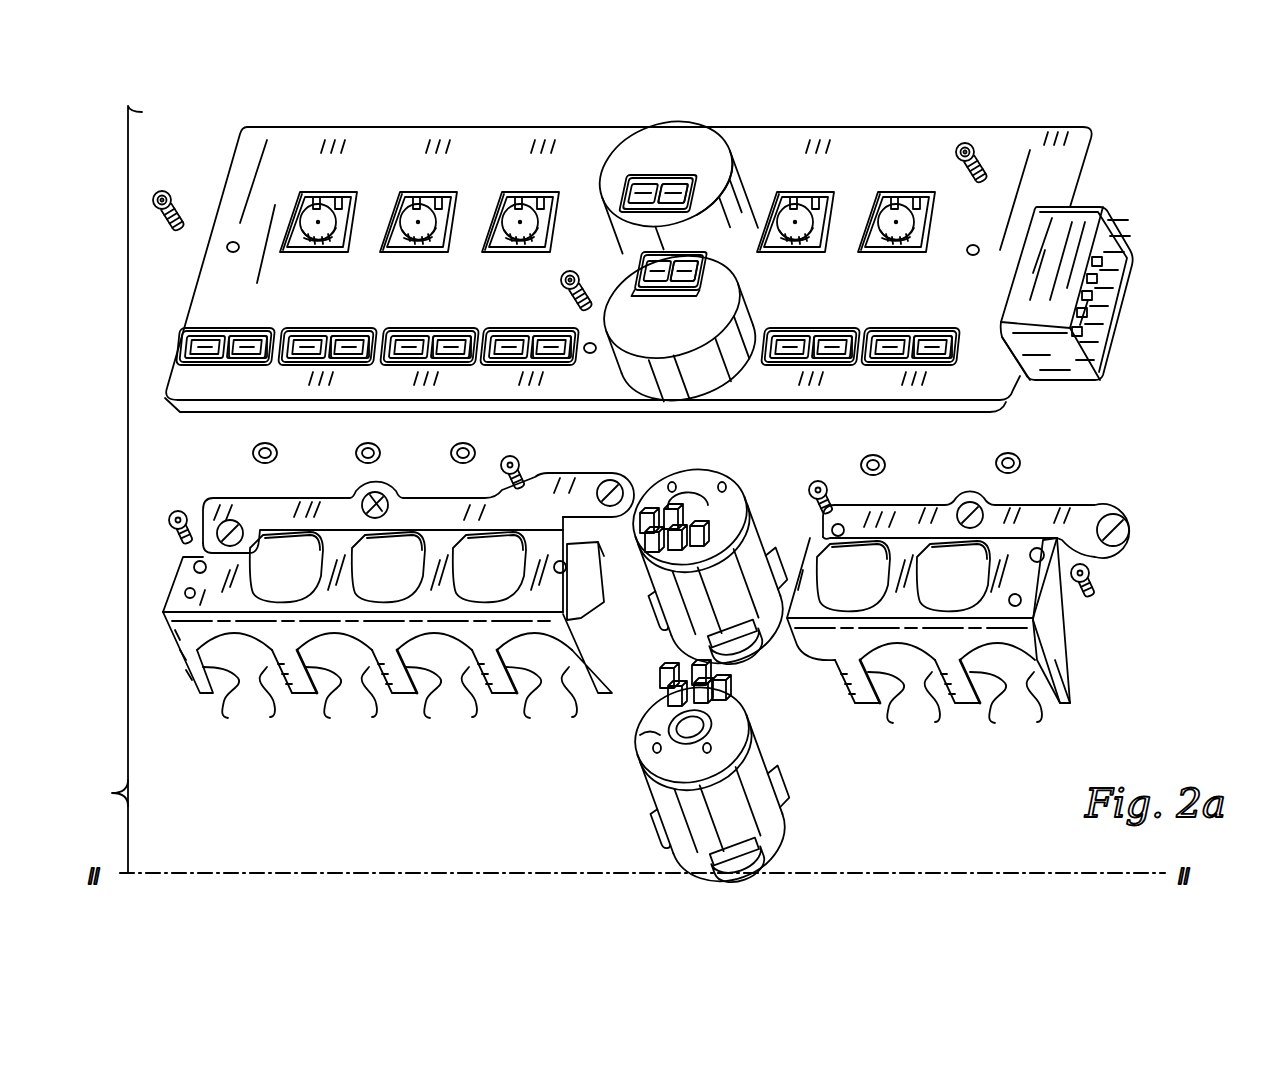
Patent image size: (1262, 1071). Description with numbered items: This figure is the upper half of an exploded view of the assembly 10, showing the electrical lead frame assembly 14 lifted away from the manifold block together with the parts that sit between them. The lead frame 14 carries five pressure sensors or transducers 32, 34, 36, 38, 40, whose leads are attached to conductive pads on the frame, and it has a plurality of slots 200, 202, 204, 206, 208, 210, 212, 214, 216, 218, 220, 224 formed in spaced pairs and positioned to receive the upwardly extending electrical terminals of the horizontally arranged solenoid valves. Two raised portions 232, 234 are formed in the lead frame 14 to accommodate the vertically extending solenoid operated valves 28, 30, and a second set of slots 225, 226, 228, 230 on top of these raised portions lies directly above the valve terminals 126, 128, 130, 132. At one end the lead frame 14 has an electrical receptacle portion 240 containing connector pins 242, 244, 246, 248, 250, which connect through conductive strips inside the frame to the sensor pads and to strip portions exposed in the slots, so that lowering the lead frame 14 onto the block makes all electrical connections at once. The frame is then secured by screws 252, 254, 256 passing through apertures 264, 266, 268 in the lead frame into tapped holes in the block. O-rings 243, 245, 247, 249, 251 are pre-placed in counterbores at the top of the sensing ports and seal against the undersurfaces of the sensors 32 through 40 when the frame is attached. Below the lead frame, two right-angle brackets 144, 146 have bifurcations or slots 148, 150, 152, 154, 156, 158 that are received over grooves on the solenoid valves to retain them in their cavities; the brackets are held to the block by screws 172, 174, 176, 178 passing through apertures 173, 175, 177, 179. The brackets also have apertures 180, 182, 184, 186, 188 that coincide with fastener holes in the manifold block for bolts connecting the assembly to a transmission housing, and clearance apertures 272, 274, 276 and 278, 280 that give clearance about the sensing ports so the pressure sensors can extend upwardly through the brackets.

The assembly 10 is at (115, 489).
The electrical lead frame assembly 14 is at (862, 124).
The solenoid operated valve 28 is at (742, 520).
The solenoid operated valve 30 is at (758, 742).
The pressure sensor or transducer 32 is at (340, 228).
The pressure sensor or transducer 34 is at (442, 228).
The pressure sensor or transducer 36 is at (542, 228).
The pressure sensor or transducer 38 is at (820, 232).
The pressure sensor or transducer 40 is at (892, 230).
The electrical connector terminal 126 is at (645, 733).
The electrical connector terminal 128 is at (720, 668).
The electrical connector terminal 130 is at (648, 506).
The electrical connector terminal 132 is at (683, 510).
The bracket 144 is at (243, 498).
The bracket 146 is at (1053, 503).
The bifurcation or slot 148 is at (270, 717).
The bifurcation or slot 150 is at (372, 717).
The bifurcation or slot 152 is at (472, 717).
The bifurcation or slot 154 is at (572, 717).
The bifurcation or slot 156 is at (935, 721).
The bifurcation or slot 158 is at (1037, 721).
The screw 172 is at (178, 509).
The aperture 173 is at (194, 566).
The screw 174 is at (508, 456).
The aperture 175 is at (590, 548).
The screw 176 is at (823, 480).
The aperture 177 is at (870, 503).
The screw 178 is at (1091, 576).
The aperture 179 is at (1048, 580).
The aperture 180 is at (232, 520).
The aperture 182 is at (371, 494).
The aperture 184 is at (612, 480).
The aperture 186 is at (972, 501).
The aperture 188 is at (1111, 513).
The slot 200 is at (217, 342).
The slot 202 is at (249, 342).
The slot 204 is at (316, 342).
The slot 206 is at (346, 342).
The slot 208 is at (416, 342).
The slot 210 is at (447, 342).
The slot 212 is at (516, 342).
The slot 214 is at (550, 340).
The slot 216 is at (799, 342).
The slot 218 is at (831, 342).
The slot 220 is at (899, 342).
The slot 224 is at (930, 342).
The slot 225 is at (692, 278).
The slot 226 is at (664, 280).
The slot 228 is at (651, 195).
The slot 230 is at (690, 196).
The raised portion 232 is at (704, 376).
The raised portion 234 is at (660, 143).
The electrical receptacle portion 240 is at (1128, 225).
The electrical connector pin 242 is at (1103, 262).
The electrical connector pin 244 is at (1098, 279).
The electrical connector pin 246 is at (1093, 296).
The electrical connector pin 248 is at (1088, 313).
The electrical connector pin 250 is at (1083, 332).
The O-ring 243 is at (271, 444).
The O-ring 245 is at (378, 457).
The O-ring 247 is at (459, 445).
The O-ring 249 is at (884, 461).
The O-ring 251 is at (1016, 455).
The screw 252 is at (165, 190).
The screw 254 is at (572, 271).
The screw 256 is at (970, 145).
The aperture 264 is at (226, 246).
The aperture 266 is at (591, 354).
The aperture 268 is at (977, 245).
The clearance aperture 272 is at (263, 588).
The clearance aperture 274 is at (363, 588).
The clearance aperture 276 is at (464, 588).
The clearance aperture 278 is at (828, 595).
The clearance aperture 280 is at (928, 595).